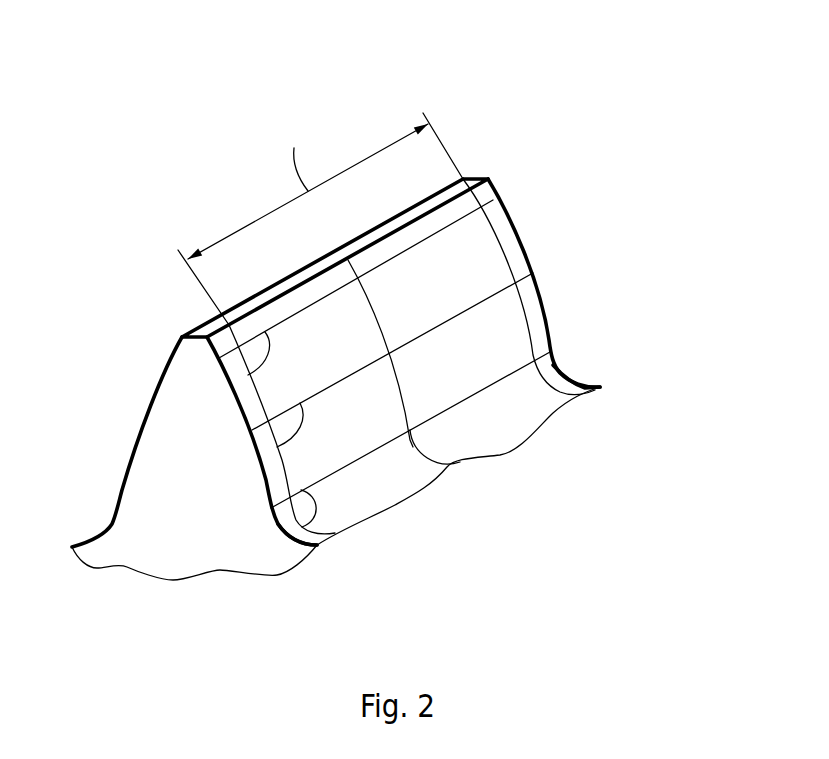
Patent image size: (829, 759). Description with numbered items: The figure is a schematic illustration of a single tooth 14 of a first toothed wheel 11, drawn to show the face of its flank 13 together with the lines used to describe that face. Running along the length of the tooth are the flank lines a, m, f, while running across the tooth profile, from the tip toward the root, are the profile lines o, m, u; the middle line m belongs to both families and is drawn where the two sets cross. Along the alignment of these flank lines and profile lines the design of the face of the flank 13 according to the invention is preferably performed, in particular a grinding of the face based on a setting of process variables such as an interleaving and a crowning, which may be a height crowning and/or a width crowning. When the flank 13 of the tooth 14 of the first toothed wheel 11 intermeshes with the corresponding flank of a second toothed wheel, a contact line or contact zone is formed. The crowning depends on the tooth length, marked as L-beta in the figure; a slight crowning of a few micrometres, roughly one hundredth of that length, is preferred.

The first toothed wheel 11 is at (642, 231).
The flank 13 is at (498, 328).
The tooth 14 is at (187, 327).
The flank line a is at (248, 376).
The flank line / profile line m is at (272, 450).
The flank line f is at (282, 533).
The profile line o is at (310, 541).
The profile line u is at (553, 393).